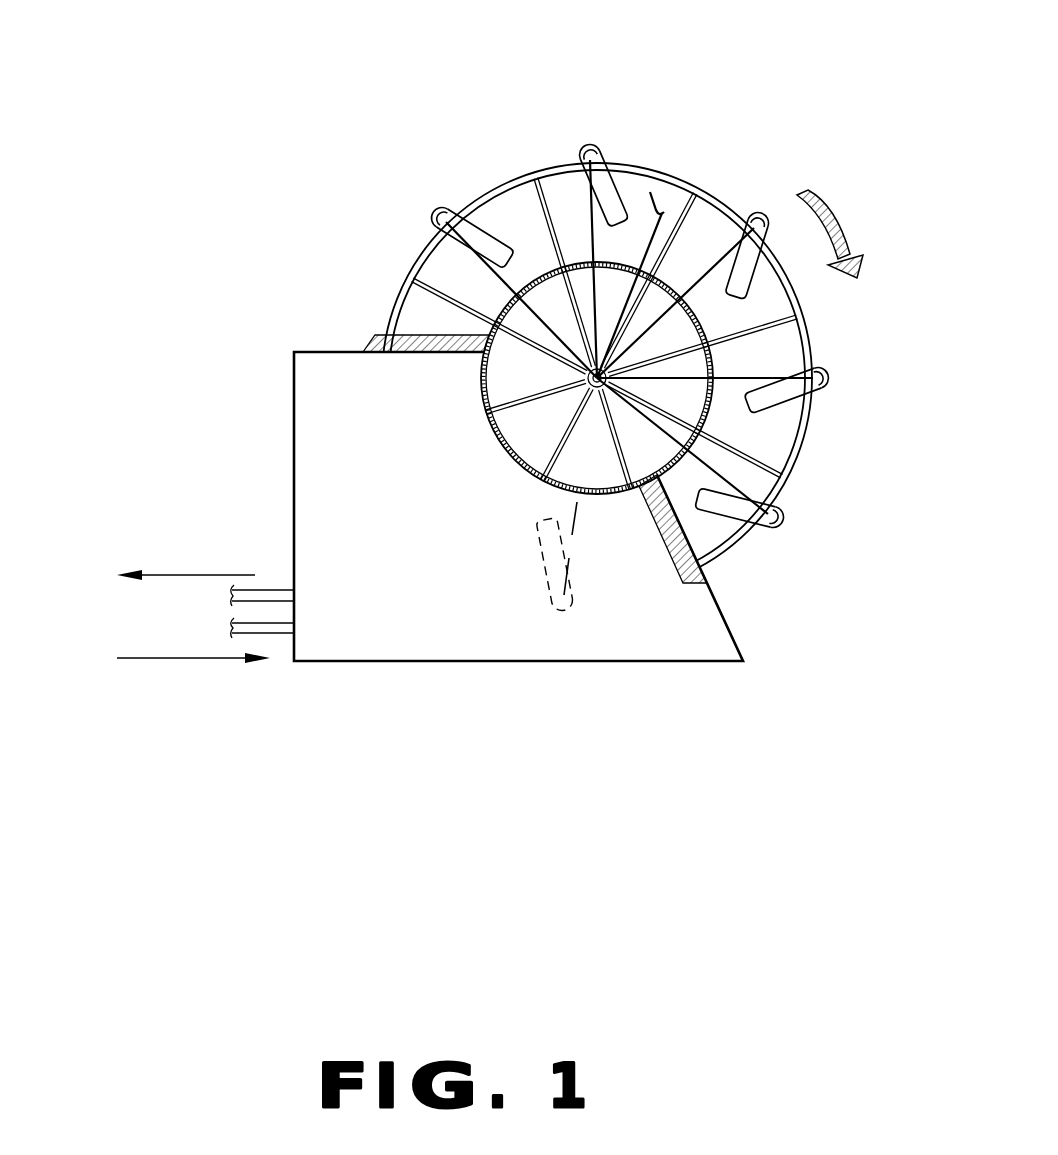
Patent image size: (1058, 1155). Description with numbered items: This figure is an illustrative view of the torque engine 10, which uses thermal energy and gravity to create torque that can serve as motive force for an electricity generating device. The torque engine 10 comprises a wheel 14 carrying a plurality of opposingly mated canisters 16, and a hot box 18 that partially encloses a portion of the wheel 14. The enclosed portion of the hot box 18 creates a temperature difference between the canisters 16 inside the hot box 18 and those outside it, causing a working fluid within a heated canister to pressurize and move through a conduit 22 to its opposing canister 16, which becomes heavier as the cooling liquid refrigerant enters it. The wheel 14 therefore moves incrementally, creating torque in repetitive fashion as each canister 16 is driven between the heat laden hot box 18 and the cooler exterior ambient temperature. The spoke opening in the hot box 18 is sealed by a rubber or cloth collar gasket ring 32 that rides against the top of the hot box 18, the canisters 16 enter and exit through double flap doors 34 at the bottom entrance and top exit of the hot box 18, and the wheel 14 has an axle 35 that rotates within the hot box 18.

The torque engine 10 is at (707, 124).
The wheel 14 is at (423, 262).
The canister 16 is at (456, 210).
The hot box 18 is at (458, 634).
The conduit 22 is at (585, 146).
The collar gasket ring 32 is at (662, 208).
The double flap doors 34 is at (370, 337).
The axle 35 is at (693, 366).